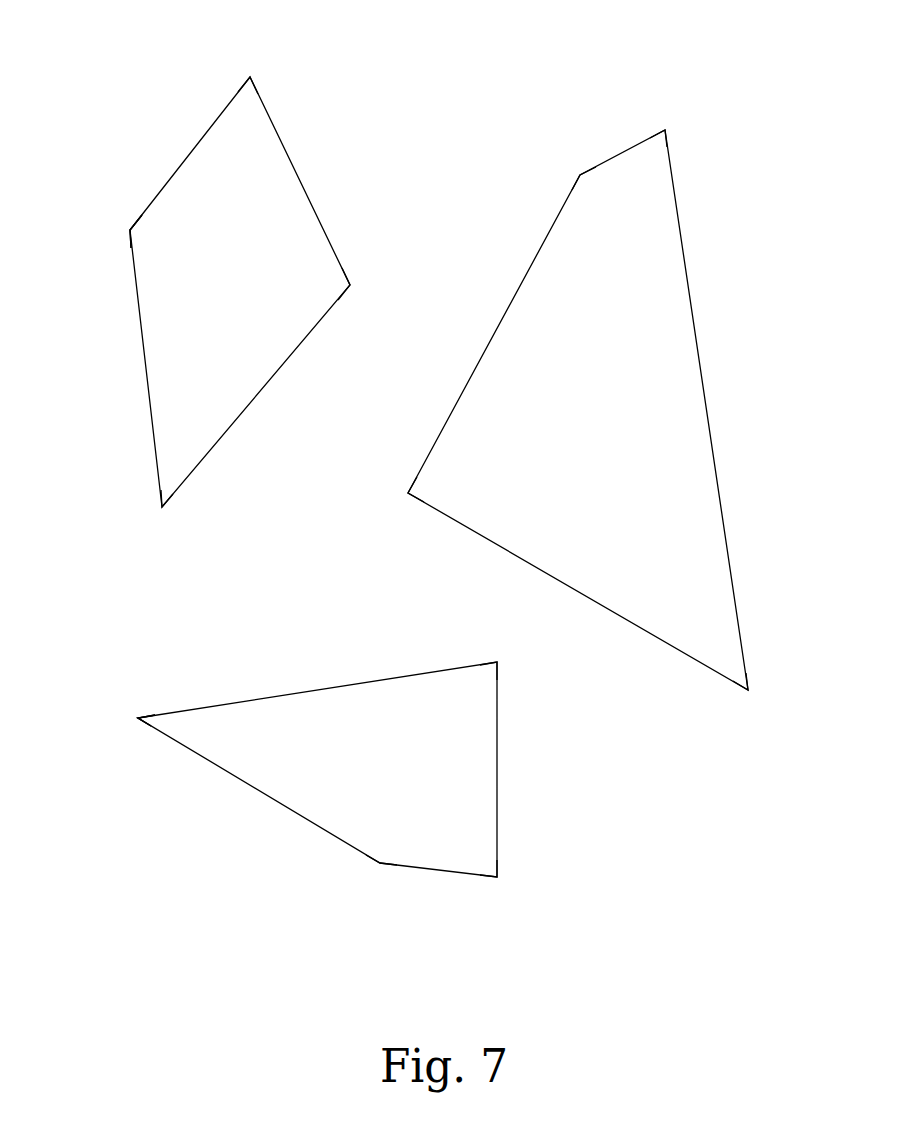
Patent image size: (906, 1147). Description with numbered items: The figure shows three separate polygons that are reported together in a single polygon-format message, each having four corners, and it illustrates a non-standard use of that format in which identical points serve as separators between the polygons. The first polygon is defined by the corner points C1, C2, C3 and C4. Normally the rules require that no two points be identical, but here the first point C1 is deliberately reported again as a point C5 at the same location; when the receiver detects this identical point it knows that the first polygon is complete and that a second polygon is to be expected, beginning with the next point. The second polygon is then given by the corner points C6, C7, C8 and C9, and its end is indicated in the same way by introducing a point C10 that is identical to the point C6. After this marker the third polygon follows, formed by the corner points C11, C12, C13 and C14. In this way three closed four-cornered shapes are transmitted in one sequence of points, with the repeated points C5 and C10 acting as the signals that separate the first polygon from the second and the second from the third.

The first corner point of the first polygon C1 is at (130, 230).
The second corner point of the first polygon C2 is at (250, 77).
The third corner point of the first polygon C3 is at (350, 285).
The fourth corner point of the first polygon C4 is at (162, 507).
The repeated point identical to C1 C5 is at (130, 230).
The first corner point of the second polygon C6 is at (138, 718).
The second corner point of the second polygon C7 is at (497, 662).
The third corner point of the second polygon C8 is at (497, 877).
The fourth corner point of the second polygon C9 is at (380, 863).
The repeated point identical to C6 C10 is at (138, 718).
The first corner point of the third polygon C11 is at (408, 493).
The second corner point of the third polygon C12 is at (580, 175).
The third corner point of the third polygon C13 is at (665, 130).
The fourth corner point of the third polygon C14 is at (748, 690).